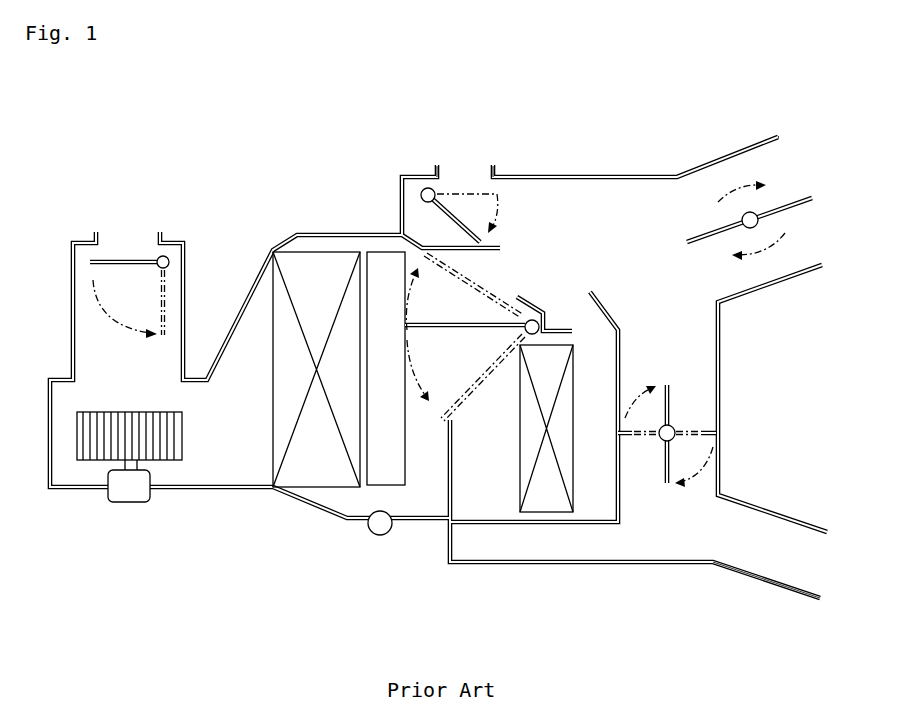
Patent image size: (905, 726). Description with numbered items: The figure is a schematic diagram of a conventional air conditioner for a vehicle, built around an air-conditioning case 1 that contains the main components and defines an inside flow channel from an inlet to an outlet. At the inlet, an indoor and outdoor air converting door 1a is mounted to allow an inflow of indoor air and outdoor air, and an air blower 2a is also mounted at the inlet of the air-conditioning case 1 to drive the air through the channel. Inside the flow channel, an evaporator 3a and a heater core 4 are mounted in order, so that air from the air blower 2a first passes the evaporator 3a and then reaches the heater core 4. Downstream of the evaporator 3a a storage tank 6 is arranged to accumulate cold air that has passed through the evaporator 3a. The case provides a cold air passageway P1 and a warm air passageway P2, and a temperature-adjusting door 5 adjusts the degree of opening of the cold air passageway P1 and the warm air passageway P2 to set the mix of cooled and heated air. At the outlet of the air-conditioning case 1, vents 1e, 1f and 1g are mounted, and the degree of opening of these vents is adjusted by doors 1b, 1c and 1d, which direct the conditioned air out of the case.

The air-conditioning case 1 is at (270, 187).
The indoor and outdoor air converting door 1a is at (118, 260).
The door 1b is at (447, 218).
The door 1c is at (703, 232).
The door 1d is at (667, 412).
The vent 1e is at (458, 175).
The vent 1f is at (772, 163).
The vent 1g is at (762, 548).
The air blower 2a is at (93, 456).
The evaporator 3a is at (308, 478).
The heater core 4 is at (552, 501).
The temperature-adjusting door 5 is at (450, 331).
The storage tank 6 is at (375, 479).
The cold air passageway P1 is at (463, 309).
The warm air passageway P2 is at (607, 421).